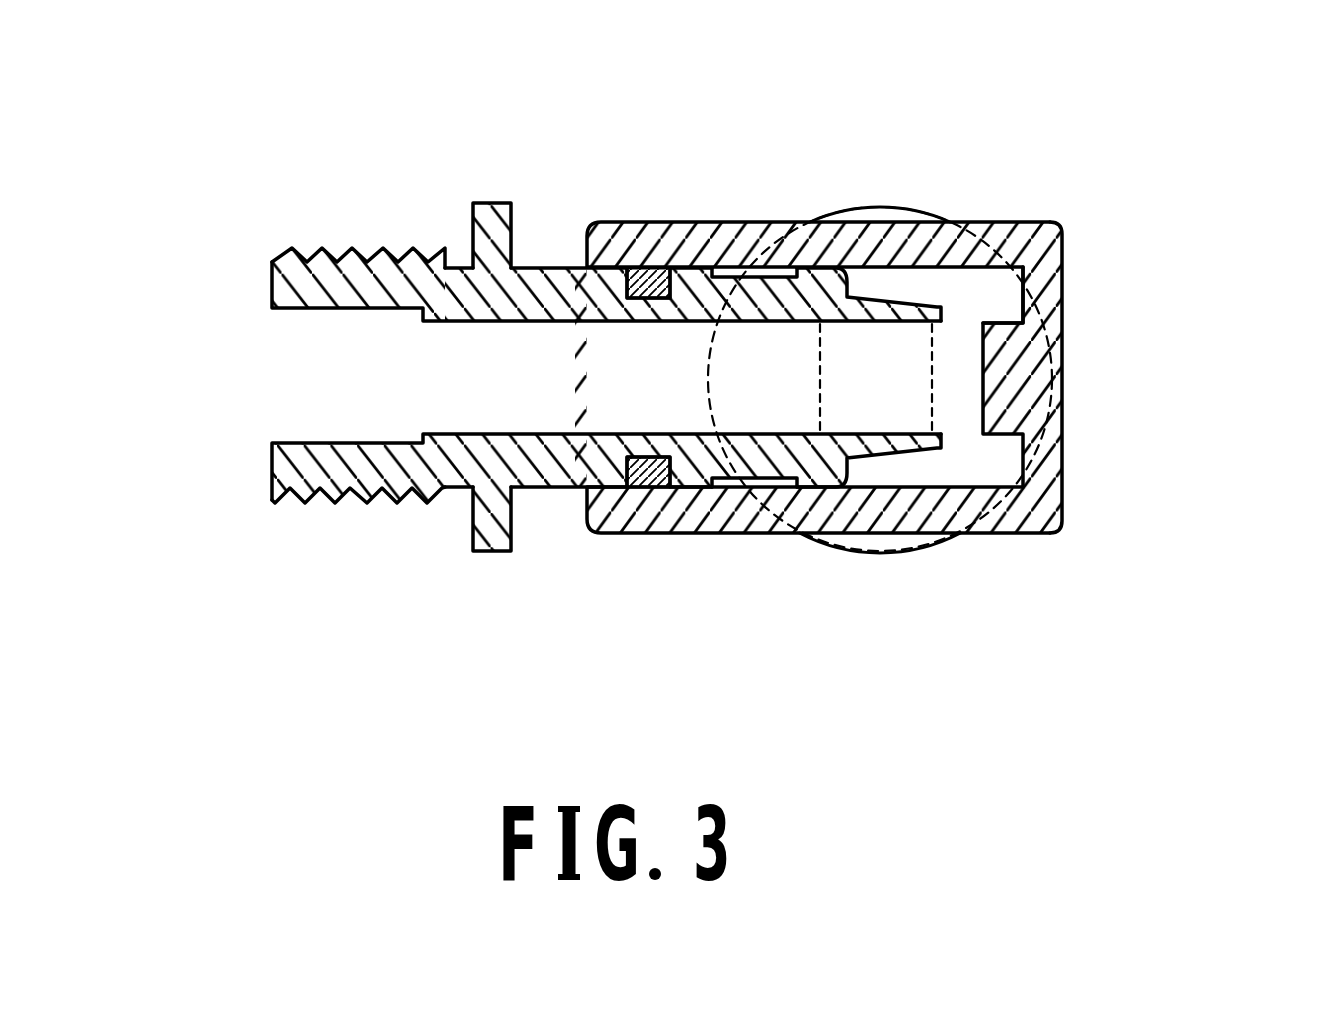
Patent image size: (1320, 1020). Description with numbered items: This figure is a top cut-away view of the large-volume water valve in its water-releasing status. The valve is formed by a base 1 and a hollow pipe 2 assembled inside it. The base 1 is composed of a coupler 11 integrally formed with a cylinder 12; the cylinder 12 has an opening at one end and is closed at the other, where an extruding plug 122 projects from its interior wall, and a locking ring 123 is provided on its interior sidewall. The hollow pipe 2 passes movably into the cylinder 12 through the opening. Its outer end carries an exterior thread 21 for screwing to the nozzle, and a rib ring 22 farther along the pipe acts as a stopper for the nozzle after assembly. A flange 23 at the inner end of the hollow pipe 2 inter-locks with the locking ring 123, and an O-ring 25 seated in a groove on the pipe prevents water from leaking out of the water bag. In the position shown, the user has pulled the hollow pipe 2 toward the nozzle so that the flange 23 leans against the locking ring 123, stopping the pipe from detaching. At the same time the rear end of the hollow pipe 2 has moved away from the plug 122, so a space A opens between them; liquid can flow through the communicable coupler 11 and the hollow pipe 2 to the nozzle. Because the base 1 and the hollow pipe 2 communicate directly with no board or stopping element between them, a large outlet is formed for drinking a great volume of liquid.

The base 1 is at (912, 357).
The coupler 11 is at (891, 207).
The cylinder 12 is at (1023, 518).
The plug 122 is at (1003, 323).
The locking ring 123 is at (805, 480).
The hollow pipe 2 is at (541, 363).
The exterior thread 21 is at (377, 249).
The rib ring 22 is at (487, 203).
The flange 23 is at (857, 488).
The O-ring 25 is at (648, 268).
The space A is at (973, 373).